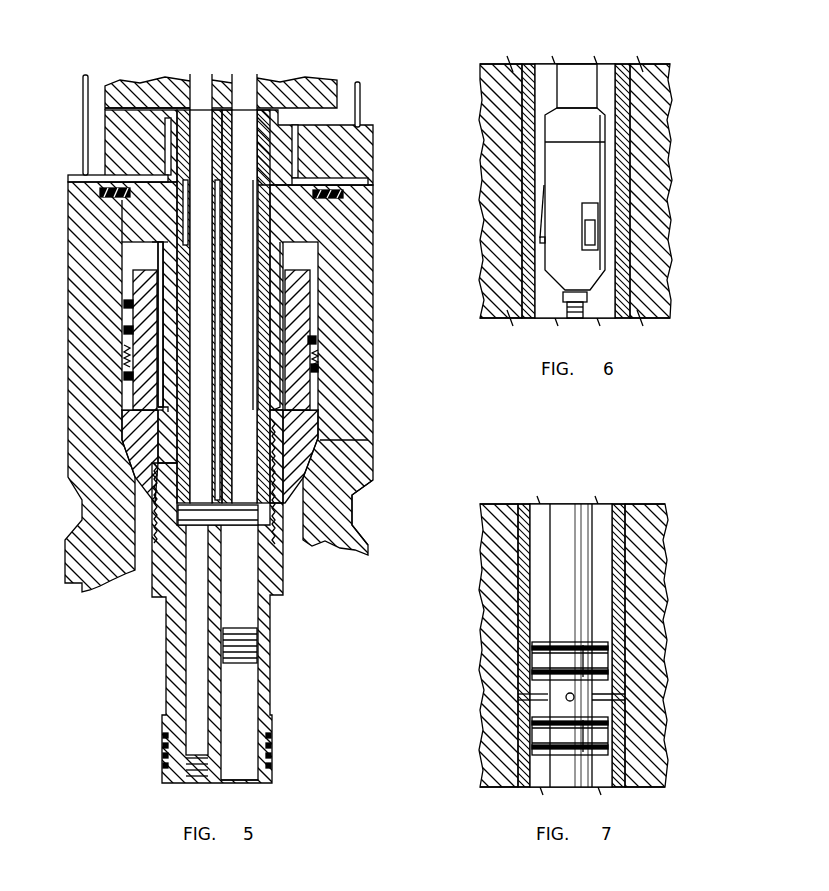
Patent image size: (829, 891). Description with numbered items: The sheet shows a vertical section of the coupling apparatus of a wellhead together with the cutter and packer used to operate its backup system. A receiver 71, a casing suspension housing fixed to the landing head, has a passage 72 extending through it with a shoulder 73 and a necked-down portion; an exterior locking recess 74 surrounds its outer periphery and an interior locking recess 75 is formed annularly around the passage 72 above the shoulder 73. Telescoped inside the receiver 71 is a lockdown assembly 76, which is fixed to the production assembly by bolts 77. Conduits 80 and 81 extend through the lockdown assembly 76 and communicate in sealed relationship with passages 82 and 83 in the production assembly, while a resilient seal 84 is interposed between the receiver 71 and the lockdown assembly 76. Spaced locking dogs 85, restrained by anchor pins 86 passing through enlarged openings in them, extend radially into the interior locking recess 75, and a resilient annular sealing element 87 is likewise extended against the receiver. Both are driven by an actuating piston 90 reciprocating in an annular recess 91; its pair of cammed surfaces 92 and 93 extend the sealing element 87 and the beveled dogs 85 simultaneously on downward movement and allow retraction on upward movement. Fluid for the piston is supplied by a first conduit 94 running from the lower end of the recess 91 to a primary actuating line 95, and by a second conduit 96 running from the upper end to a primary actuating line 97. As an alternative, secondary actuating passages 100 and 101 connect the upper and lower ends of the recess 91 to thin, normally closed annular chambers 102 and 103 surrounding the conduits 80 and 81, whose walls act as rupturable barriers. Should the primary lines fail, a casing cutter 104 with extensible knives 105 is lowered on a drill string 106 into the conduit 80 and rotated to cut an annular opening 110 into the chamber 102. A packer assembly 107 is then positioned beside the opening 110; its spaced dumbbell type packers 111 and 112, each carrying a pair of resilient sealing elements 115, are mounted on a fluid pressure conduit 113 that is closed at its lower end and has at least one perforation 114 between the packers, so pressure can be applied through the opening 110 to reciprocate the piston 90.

In FIG. 5, the receiver 71 is at (352, 258).
In FIG. 5, the passage 72 is at (312, 512).
In FIG. 5, the shoulder 73 is at (340, 440).
In FIG. 5, the exterior locking recess 74 is at (362, 494).
In FIG. 5, the interior locking recess 75 is at (322, 367).
In FIG. 5, the lockdown assembly 76 is at (358, 148).
In FIG. 6, the lockdown assembly 76 is at (660, 85).
In FIG. 5, the bolts 77 is at (120, 118).
In FIG. 5, the conduit 80 is at (208, 140).
In FIG. 6, the conduit 80 is at (620, 207).
In FIG. 7, the conduit 80 is at (625, 746).
In FIG. 5, the conduit 81 is at (253, 140).
In FIG. 5, the passage 82 is at (208, 97).
In FIG. 5, the passage 83 is at (253, 97).
In FIG. 5, the resilient seal 84 is at (343, 201).
In FIG. 5, the locking dogs 85 is at (122, 356).
In FIG. 5, the anchor pins 86 is at (128, 332).
In FIG. 5, the resilient annular sealing element 87 is at (313, 312).
In FIG. 5, the actuating piston 90 is at (130, 306).
In FIG. 5, the annular recess 91 is at (149, 267).
In FIG. 5, the cammed surface 92 is at (308, 340).
In FIG. 5, the cammed surface 93 is at (130, 378).
In FIG. 5, the first conduit 94 is at (104, 177).
In FIG. 5, the primary actuating line 95 is at (83, 92).
In FIG. 5, the second conduit 96 is at (293, 198).
In FIG. 5, the primary actuating line 97 is at (361, 92).
In FIG. 5, the secondary actuating passage 100 is at (163, 248).
In FIG. 5, the secondary actuating passage 101 is at (273, 410).
In FIG. 5, the annular chamber 102 is at (180, 306).
In FIG. 6, the annular chamber 102 is at (630, 160).
In FIG. 5, the annular chamber 103 is at (256, 306).
In FIG. 6, the casing cutter 104 is at (581, 180).
In FIG. 6, the extensible knives 105 is at (600, 240).
In FIG. 6, the drill string 106 is at (585, 91).
In FIG. 7, the packer assembly 107 is at (600, 621).
In FIG. 7, the annular opening 110 is at (625, 697).
In FIG. 7, the packer 111 is at (585, 660).
In FIG. 7, the packer 112 is at (588, 752).
In FIG. 7, the fluid pressure conduit 113 is at (581, 592).
In FIG. 7, the perforation 114 is at (570, 693).
In FIG. 7, the resilient sealing elements 115 is at (612, 651).